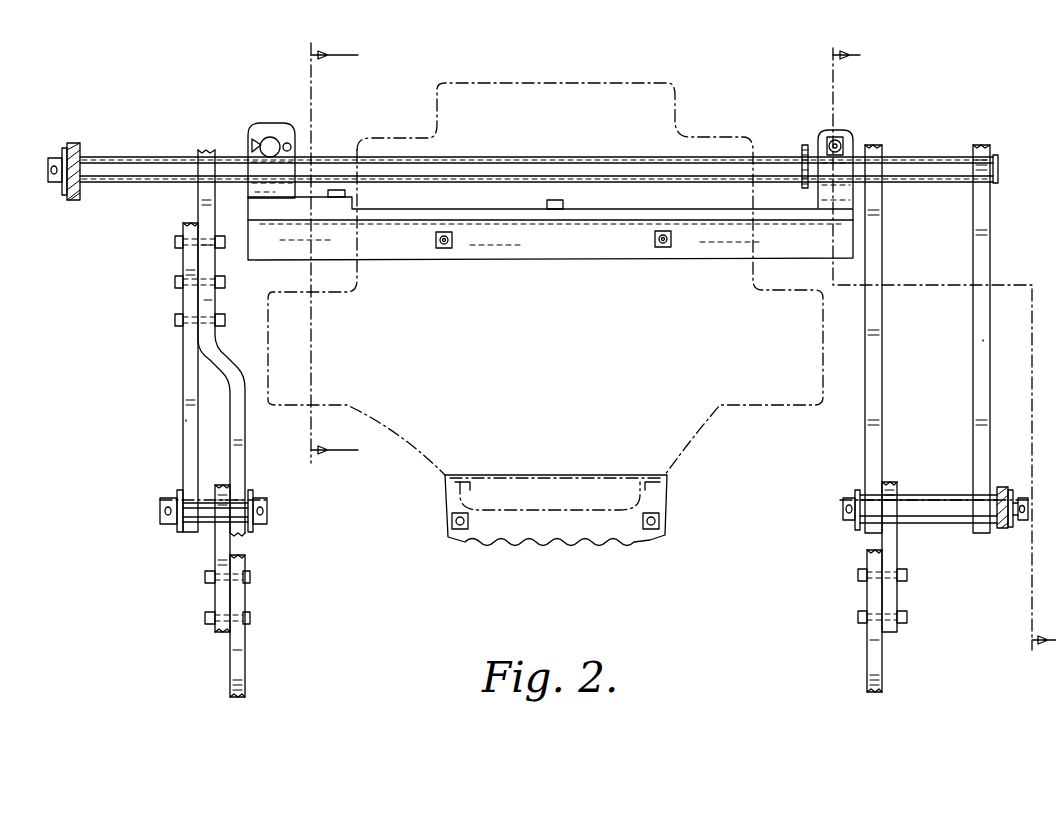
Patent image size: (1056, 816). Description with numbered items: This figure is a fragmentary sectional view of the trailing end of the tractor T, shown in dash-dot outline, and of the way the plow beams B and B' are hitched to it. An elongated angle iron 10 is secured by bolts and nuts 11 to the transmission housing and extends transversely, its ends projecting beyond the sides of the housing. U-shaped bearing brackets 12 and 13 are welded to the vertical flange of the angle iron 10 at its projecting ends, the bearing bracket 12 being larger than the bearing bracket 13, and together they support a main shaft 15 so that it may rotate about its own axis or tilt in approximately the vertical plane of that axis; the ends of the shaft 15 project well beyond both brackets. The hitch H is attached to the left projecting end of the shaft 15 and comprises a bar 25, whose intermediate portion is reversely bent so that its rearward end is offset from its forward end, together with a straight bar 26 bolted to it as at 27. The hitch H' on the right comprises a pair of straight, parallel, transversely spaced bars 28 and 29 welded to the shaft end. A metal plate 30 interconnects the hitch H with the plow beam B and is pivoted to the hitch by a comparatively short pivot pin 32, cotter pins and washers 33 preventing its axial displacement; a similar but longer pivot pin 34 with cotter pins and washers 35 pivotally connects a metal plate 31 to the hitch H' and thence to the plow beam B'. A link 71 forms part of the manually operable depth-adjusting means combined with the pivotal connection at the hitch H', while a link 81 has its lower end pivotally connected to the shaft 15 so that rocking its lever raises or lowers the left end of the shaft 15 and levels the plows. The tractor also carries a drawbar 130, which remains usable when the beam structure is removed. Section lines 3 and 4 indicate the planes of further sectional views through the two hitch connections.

The section line 3- 3 is at (323, 253).
The section line 4- 4 is at (932, 349).
The angle iron 10 is at (597, 258).
The bolts and nuts 11 is at (447, 250).
The bearing bracket 12 is at (282, 130).
The bearing bracket 13 is at (840, 140).
The main shaft 15 is at (555, 157).
The bar 25 is at (224, 343).
The straight bar 26 is at (190, 372).
The bolts 27 is at (175, 320).
The bar 28 is at (876, 373).
The bar 29 is at (985, 270).
The metal plate 30 is at (218, 597).
The metal plate 31 is at (892, 597).
The pivot pin 32 is at (210, 517).
The cotter pins and washers 33 is at (160, 514).
The pivot pin 34 is at (950, 497).
The cotter pins and washers 35 is at (843, 512).
The link 71 is at (1001, 530).
The link 81 is at (80, 148).
The drawbar 130 is at (647, 540).
The hitch H is at (157, 426).
The hitch H' is at (959, 330).
The plow beam B is at (255, 626).
The plow beam B' is at (895, 621).
The tractor T is at (723, 415).